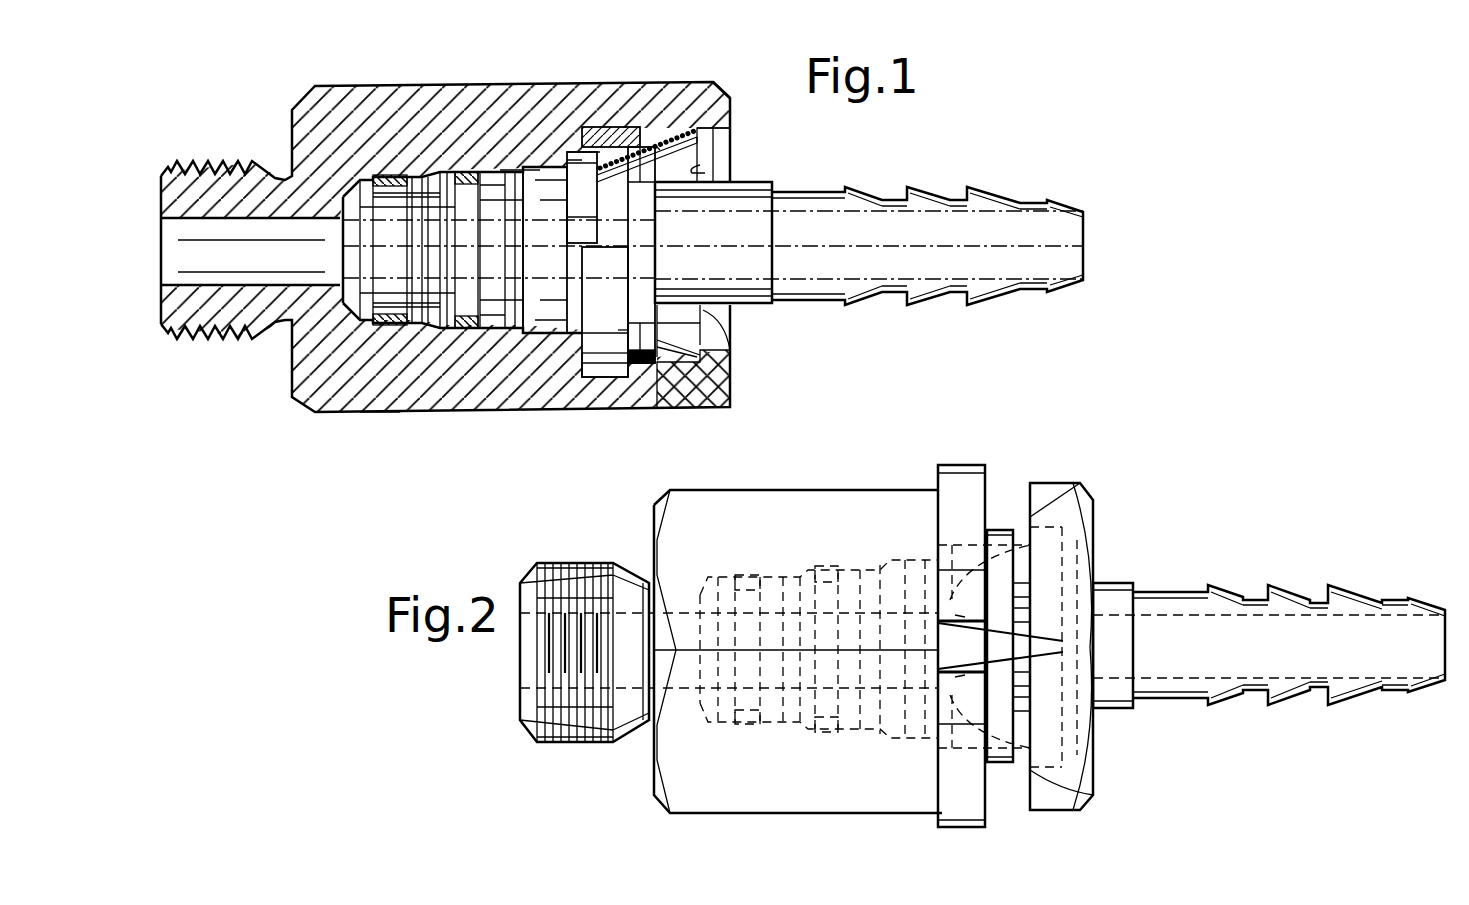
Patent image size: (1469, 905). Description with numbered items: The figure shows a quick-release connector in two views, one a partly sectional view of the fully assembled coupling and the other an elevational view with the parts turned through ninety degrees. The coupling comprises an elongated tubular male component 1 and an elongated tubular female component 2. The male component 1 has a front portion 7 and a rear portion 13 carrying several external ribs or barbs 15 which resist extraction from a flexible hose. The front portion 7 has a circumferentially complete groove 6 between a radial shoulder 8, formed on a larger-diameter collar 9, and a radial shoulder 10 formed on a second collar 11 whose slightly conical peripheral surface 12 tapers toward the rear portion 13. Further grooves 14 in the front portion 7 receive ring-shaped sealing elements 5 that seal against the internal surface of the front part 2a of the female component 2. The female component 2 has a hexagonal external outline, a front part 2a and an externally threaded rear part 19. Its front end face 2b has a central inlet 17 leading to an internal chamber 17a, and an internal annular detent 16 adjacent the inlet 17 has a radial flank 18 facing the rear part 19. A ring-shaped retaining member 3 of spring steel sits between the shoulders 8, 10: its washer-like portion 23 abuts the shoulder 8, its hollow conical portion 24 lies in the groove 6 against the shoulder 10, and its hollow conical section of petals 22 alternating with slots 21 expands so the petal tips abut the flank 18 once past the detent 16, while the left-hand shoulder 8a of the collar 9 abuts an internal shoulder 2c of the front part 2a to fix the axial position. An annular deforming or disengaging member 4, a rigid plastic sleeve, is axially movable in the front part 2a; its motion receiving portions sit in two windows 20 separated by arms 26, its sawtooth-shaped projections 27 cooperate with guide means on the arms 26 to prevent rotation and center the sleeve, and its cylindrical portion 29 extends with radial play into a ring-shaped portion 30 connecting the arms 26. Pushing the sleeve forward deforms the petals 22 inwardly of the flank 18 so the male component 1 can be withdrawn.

In FIG. 1, the male component 1 is at (927, 218).
In FIG. 2, the male component 1 is at (1269, 615).
In FIG. 1, the female component 2 is at (293, 132).
In FIG. 2, the female component 2 is at (648, 548).
In FIG. 1, the front part 2a is at (368, 413).
In FIG. 1, the front end face 2b is at (726, 96).
In FIG. 1, the internal shoulder 2c is at (530, 168).
In FIG. 1, the retaining member 3 is at (700, 128).
In FIG. 2, the retaining member 3 is at (1020, 530).
In FIG. 1, the deforming or disengaging member 4 is at (585, 152).
In FIG. 2, the deforming or disengaging member 4 is at (948, 466).
In FIG. 1, the sealing elements 5 is at (390, 177).
In FIG. 1, the groove 6 is at (600, 198).
In FIG. 1, the front portion 7 is at (492, 172).
In FIG. 1, the radial shoulder 8 is at (580, 238).
In FIG. 2, the radial shoulder 8 is at (819, 649).
In FIG. 1, the left-hand shoulder 8a is at (518, 335).
In FIG. 1, the collar 9 is at (520, 172).
In FIG. 1, the radial shoulder 10 is at (642, 240).
In FIG. 1, the second collar 11 is at (605, 312).
In FIG. 1, the conical peripheral surface 12 is at (713, 240).
In FIG. 1, the rear portion 13 is at (805, 190).
In FIG. 2, the rear portion 13 is at (1163, 590).
In FIG. 1, the grooves 14 is at (378, 178).
In FIG. 1, the ribs or barbs 15 is at (858, 187).
In FIG. 2, the ribs or barbs 15 is at (1225, 588).
In FIG. 1, the detent 16 is at (732, 398).
In FIG. 1, the inlet 17 is at (715, 163).
In FIG. 1, the internal chamber 17a is at (660, 145).
In FIG. 1, the radial flank 18 is at (708, 170).
In FIG. 1, the rear part 19 is at (215, 335).
In FIG. 2, the rear part 19 is at (565, 743).
In FIG. 1, the windows 20 is at (678, 370).
In FIG. 2, the windows 20 is at (1078, 483).
In FIG. 1, the recesses or slots 21 is at (718, 148).
In FIG. 1, the petals 22 is at (660, 150).
In FIG. 2, the petals 22 is at (1080, 785).
In FIG. 1, the washer-like portion 23 is at (578, 150).
In FIG. 1, the hollow conical portion 24 is at (640, 140).
In FIG. 1, the arms or webs 26 is at (612, 128).
In FIG. 2, the arms or webs 26 is at (960, 657).
In FIG. 1, the projections 27 is at (582, 397).
In FIG. 2, the projections 27 is at (957, 612).
In FIG. 1, the cylindrical portion 29 is at (642, 378).
In FIG. 2, the cylindrical portion 29 is at (1000, 528).
In FIG. 1, the ring-shaped portion 30 is at (645, 328).
In FIG. 2, the ring-shaped portion 30 is at (1052, 482).